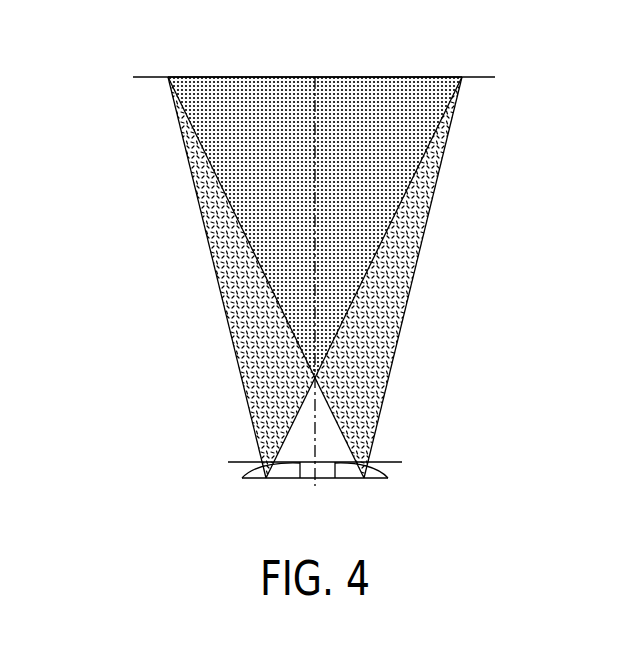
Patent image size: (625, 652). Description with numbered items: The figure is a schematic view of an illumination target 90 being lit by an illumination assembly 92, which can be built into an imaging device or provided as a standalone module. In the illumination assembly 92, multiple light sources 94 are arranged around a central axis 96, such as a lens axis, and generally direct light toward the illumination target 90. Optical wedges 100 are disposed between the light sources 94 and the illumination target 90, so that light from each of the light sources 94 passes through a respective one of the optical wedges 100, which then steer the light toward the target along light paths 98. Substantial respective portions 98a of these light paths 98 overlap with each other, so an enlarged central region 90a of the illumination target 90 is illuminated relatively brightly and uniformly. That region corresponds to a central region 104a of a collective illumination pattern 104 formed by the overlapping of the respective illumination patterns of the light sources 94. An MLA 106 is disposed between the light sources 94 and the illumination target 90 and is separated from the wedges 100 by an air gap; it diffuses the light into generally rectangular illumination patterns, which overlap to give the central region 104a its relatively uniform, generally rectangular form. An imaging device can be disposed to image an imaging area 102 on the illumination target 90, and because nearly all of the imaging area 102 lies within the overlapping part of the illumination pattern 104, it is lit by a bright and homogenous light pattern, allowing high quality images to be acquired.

The illumination target 90 is at (137, 78).
The enlarged central region of the illumination target 90a is at (240, 63).
The illumination assembly 92 is at (212, 462).
The light sources 94 is at (262, 479).
The central axis 96 is at (315, 75).
The light paths 98 is at (216, 282).
The overlapping portions of the light paths 98a is at (333, 212).
The optical wedges 100 is at (288, 466).
The imaging area 102 is at (240, 94).
The collective illumination pattern 104 is at (477, 94).
The central region of the illumination pattern 104a is at (373, 125).
The MLA 106 is at (388, 459).